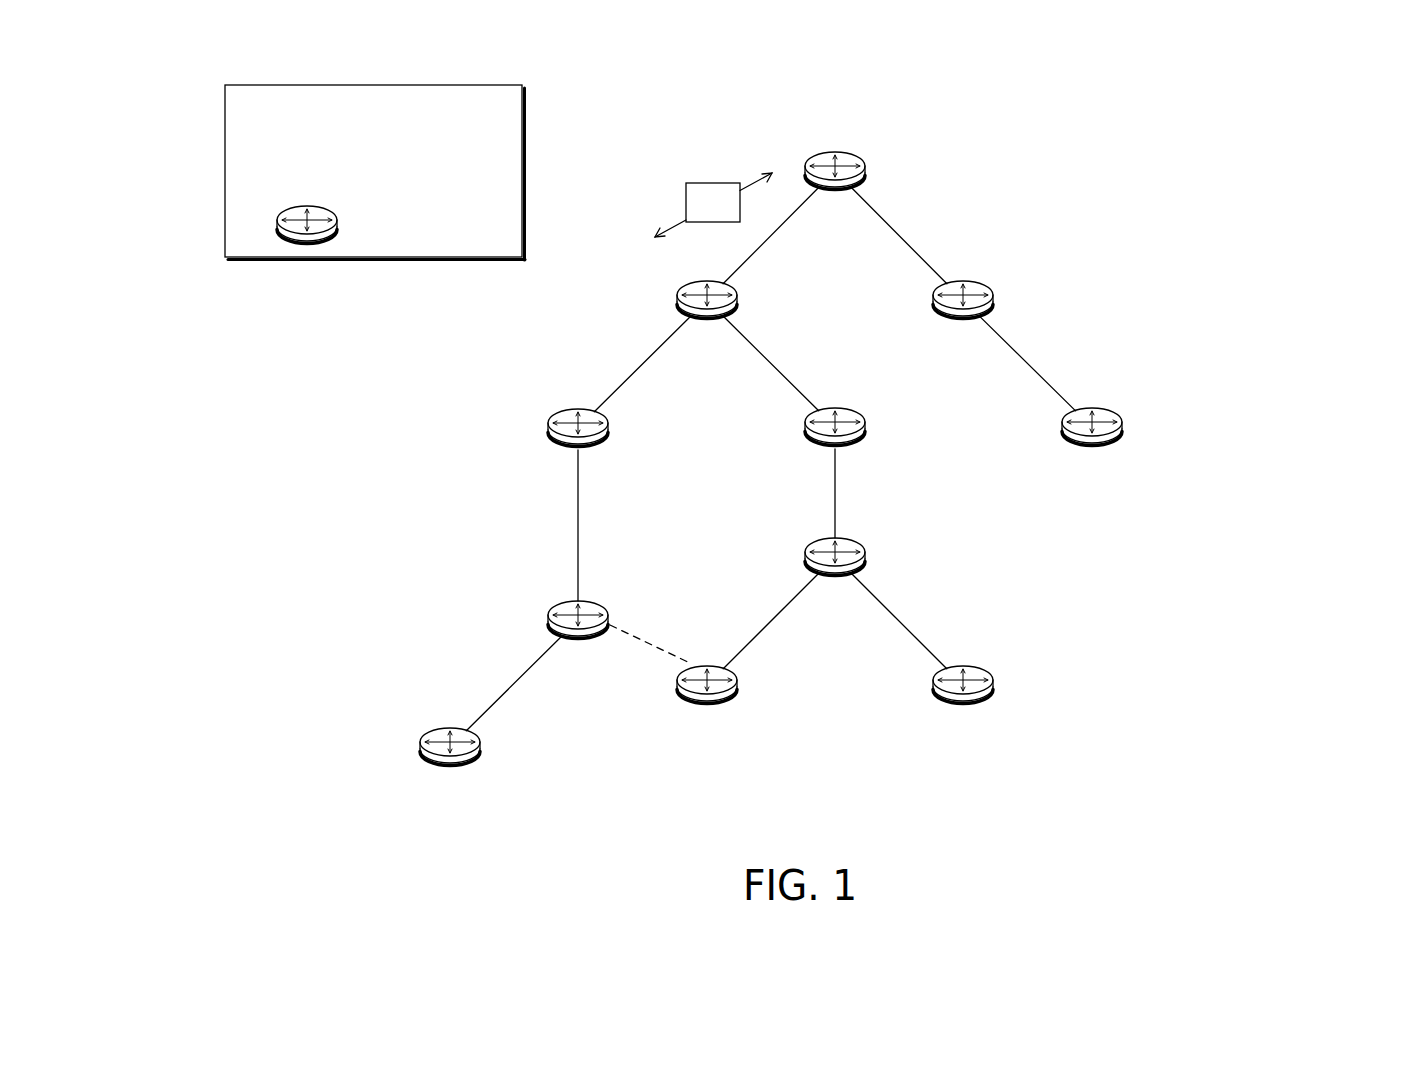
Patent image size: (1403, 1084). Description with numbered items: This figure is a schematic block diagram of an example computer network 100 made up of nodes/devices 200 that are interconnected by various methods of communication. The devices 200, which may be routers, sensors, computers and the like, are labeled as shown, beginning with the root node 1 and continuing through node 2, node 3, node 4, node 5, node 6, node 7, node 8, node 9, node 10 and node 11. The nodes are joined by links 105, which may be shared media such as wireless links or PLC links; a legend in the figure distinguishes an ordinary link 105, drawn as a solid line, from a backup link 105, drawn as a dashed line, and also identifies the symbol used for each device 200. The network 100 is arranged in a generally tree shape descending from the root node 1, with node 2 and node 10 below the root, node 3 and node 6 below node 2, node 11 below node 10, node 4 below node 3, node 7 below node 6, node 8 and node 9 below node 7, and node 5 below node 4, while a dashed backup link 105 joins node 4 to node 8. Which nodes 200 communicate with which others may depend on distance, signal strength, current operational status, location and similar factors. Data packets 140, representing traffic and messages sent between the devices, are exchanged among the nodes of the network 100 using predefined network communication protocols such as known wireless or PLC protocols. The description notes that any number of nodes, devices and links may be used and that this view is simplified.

The computer network 100 is at (1273, 144).
The links 105 is at (257, 116).
The data packets 140 is at (698, 214).
The nodes/devices 200 is at (383, 225).
The root node 1 is at (858, 156).
The node two 2 is at (703, 288).
The node three 3 is at (575, 416).
The node four 4 is at (575, 608).
The node five 5 is at (447, 736).
The node six 6 is at (839, 416).
The node seven 7 is at (832, 545).
The node eight 8 is at (707, 673).
The node nine 9 is at (967, 673).
The node ten 10 is at (969, 289).
The node eleven 11 is at (1098, 416).